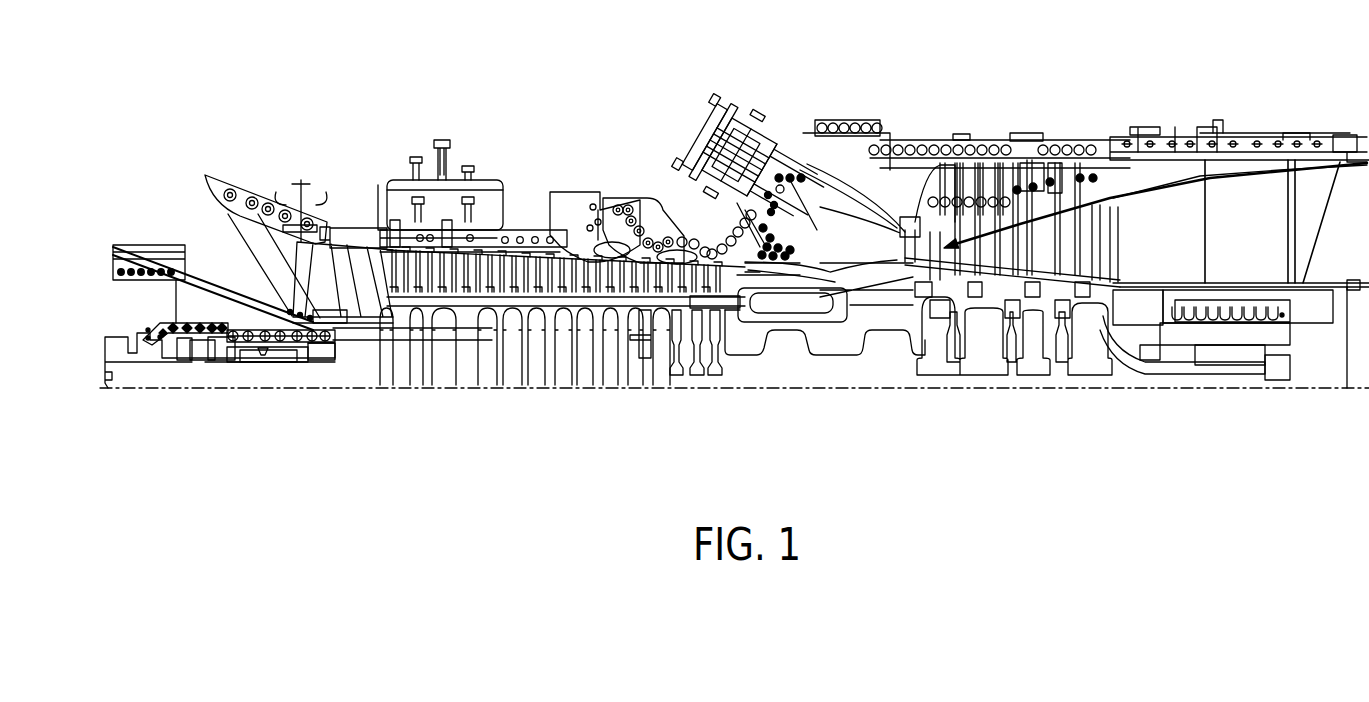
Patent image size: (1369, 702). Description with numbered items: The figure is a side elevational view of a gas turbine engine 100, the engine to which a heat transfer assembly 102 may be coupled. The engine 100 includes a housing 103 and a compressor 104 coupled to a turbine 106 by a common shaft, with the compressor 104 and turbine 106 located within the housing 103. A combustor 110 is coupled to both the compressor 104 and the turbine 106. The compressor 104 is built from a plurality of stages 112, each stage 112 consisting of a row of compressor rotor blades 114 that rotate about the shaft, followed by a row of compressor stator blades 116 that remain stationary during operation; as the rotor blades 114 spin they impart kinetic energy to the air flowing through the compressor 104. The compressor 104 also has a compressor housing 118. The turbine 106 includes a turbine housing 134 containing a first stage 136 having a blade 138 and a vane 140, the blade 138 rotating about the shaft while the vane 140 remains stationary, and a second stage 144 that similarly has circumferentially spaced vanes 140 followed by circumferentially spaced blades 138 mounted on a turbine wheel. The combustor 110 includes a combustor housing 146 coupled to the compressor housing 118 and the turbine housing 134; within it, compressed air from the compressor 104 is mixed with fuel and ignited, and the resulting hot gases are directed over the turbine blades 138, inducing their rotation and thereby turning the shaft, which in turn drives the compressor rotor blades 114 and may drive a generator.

The gas turbine engine 100 is at (333, 60).
The heat transfer assembly 102 is at (784, 344).
The housing 103 is at (527, 240).
The compressor 104 is at (666, 325).
The turbine 106 is at (1114, 208).
The combustor 110 is at (829, 198).
The stages 112 is at (561, 342).
The compressor rotor blades 114 is at (625, 332).
The compressor stator blades 116 is at (660, 262).
The compressor housing 118 is at (520, 237).
The turbine housing 134 is at (1168, 200).
The first stage 136 is at (917, 217).
The blade 138 is at (990, 243).
The vane 140 is at (963, 243).
The second stage 144 is at (1067, 227).
The combustor housing 146 is at (793, 135).